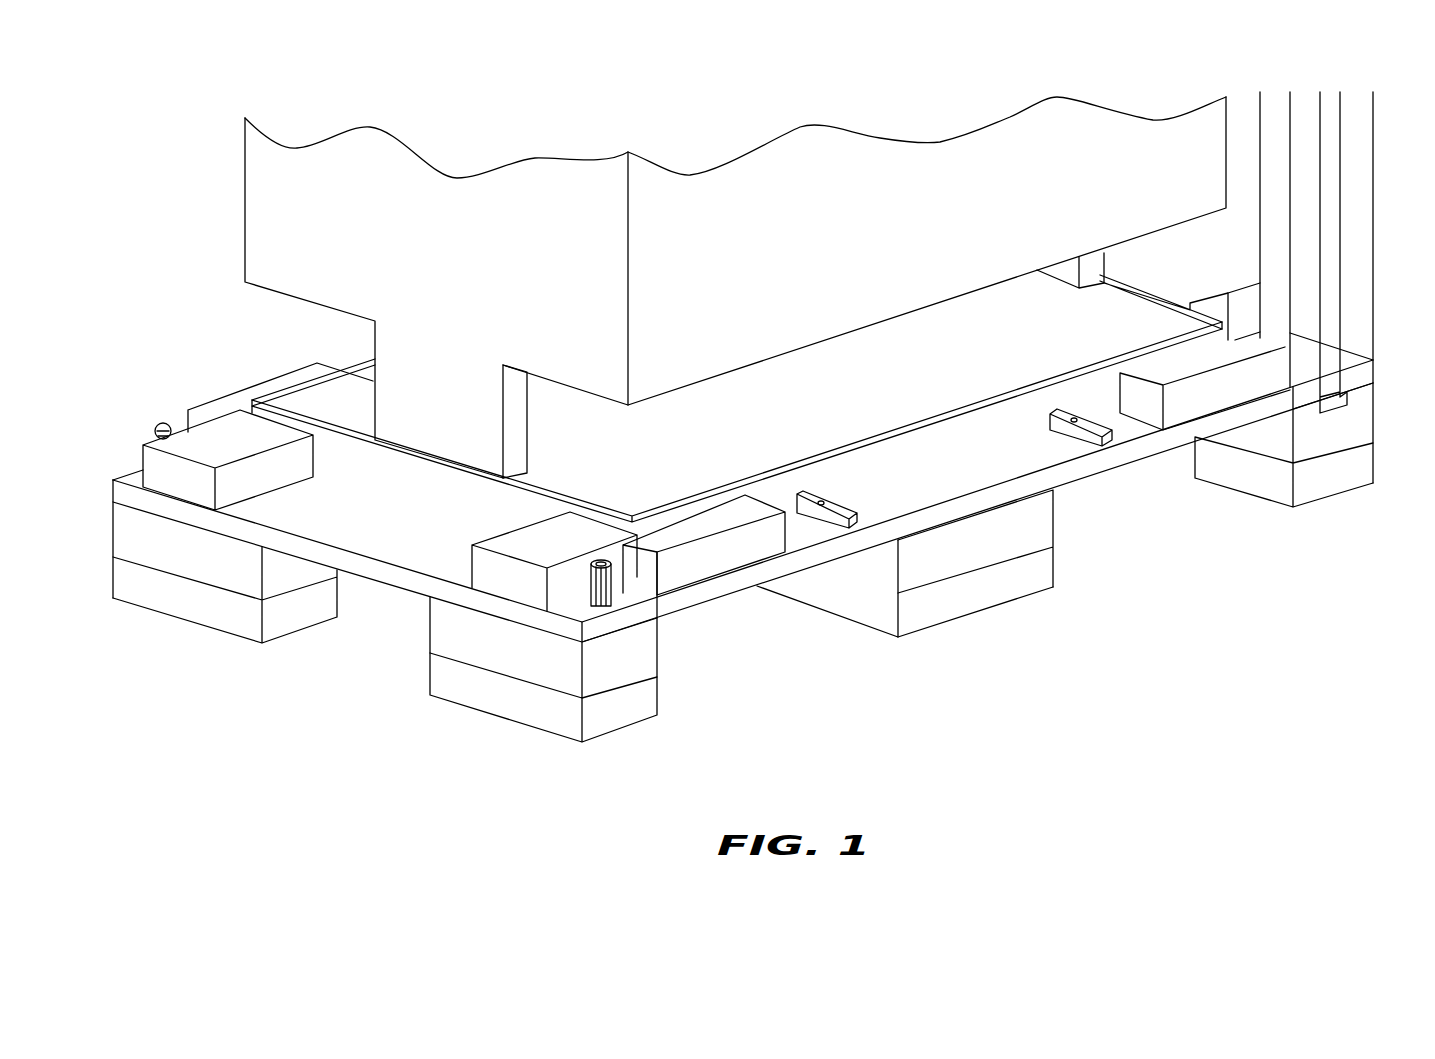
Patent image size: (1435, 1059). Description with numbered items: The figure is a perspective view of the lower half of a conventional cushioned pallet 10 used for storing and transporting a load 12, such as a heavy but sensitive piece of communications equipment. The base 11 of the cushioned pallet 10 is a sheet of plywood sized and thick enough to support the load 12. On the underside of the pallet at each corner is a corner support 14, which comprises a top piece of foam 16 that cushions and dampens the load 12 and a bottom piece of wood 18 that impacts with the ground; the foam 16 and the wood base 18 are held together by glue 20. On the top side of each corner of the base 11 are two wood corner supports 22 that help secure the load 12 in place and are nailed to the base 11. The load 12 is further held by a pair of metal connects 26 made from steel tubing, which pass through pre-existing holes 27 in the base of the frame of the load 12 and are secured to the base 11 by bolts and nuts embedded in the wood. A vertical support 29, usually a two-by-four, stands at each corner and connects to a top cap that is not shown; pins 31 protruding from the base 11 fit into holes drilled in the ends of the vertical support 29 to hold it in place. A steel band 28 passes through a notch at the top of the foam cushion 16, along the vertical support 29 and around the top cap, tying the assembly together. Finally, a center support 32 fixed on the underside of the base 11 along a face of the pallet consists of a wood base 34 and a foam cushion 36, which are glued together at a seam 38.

The cushioned pallet 10 is at (310, 678).
The base 11 is at (672, 599).
The load 12 is at (241, 205).
The corner support 14 is at (578, 672).
The top piece of foam 16 is at (636, 653).
The bottom piece of wood 18 is at (617, 713).
The glue 20 is at (460, 661).
The wood corner supports 22 is at (551, 535).
The metal connects 26 is at (860, 521).
The pre-existing holes 27 is at (811, 490).
The steel band 28 is at (1332, 302).
The vertical support 29 is at (1312, 350).
The pins 31 is at (582, 589).
The center support 32 is at (1070, 510).
The wood base 34 is at (905, 586).
The foam cushion 36 is at (921, 568).
The seam 38 is at (879, 591).